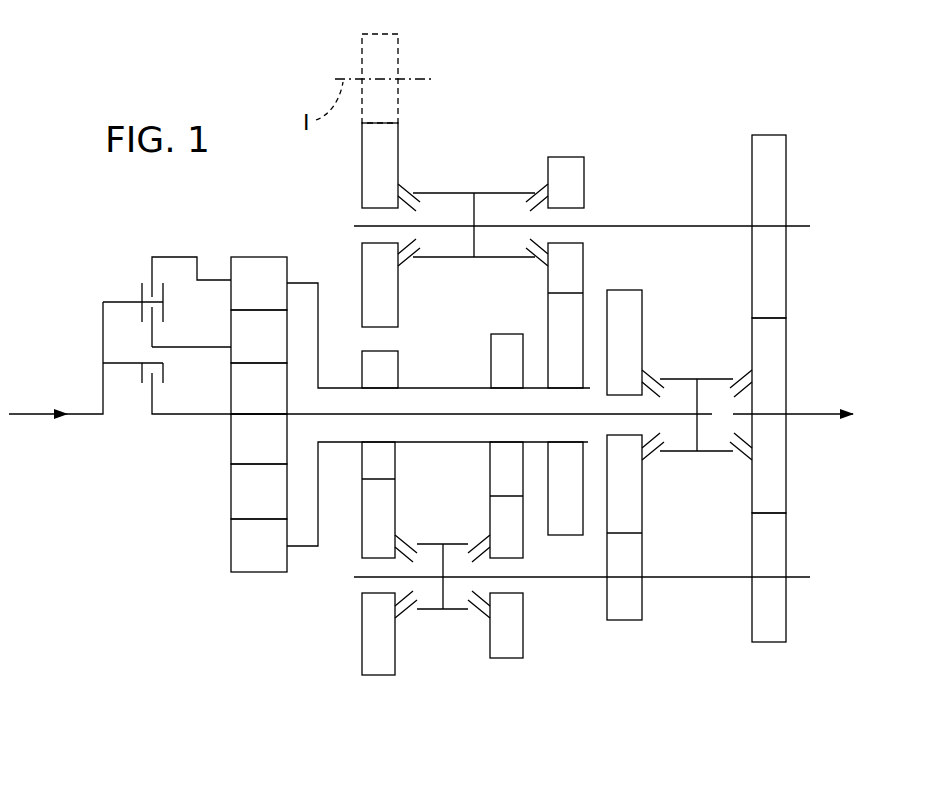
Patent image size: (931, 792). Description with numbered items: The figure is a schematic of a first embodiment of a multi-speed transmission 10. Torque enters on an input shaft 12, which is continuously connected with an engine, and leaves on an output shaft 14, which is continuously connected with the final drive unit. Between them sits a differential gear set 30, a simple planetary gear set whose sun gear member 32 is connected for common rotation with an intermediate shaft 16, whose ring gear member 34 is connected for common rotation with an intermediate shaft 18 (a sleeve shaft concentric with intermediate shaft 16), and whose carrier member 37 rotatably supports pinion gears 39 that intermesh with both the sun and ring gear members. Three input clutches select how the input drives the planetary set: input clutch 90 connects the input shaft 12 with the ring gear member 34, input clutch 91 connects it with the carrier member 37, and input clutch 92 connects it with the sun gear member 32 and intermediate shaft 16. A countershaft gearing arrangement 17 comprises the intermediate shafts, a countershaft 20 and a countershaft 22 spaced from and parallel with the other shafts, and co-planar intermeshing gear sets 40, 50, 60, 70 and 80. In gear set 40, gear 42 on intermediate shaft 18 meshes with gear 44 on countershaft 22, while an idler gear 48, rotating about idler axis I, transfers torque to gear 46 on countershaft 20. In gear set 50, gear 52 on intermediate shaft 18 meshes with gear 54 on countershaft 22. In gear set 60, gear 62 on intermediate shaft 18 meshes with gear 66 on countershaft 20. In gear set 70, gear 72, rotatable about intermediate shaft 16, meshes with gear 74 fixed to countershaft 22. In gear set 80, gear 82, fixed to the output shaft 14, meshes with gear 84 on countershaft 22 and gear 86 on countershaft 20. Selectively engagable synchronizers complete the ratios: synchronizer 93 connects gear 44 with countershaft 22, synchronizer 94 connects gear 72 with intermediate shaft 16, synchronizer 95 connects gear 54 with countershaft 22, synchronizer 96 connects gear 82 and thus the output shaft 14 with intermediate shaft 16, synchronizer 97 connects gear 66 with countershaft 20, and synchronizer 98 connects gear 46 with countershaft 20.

The multi-speed transmission 10 is at (839, 144).
The input shaft 12 is at (30, 416).
The output shaft 14 is at (812, 418).
The intermediate shaft 16 is at (170, 416).
The countershaft gearing arrangement 17 is at (641, 102).
The intermediate shaft 18 is at (448, 388).
The countershaft 20 is at (676, 226).
The countershaft 22 is at (710, 578).
The differential gear set 30 is at (236, 432).
The sun gear member 32 is at (230, 440).
The ring gear member 34 is at (258, 257).
The carrier member 37 is at (200, 348).
The pinion gears 39 is at (231, 333).
The gear set 40 is at (383, 606).
The gear 42 is at (395, 465).
The gear 44 is at (362, 652).
The gear 46 is at (362, 176).
The idler gear 48 is at (360, 55).
The gear set 50 is at (509, 596).
The gear 52 is at (490, 488).
The gear 54 is at (523, 645).
The gear set 60 is at (596, 237).
The gear 62 is at (584, 302).
The gear 66 is at (584, 170).
The gear set 70 is at (618, 491).
The gear 72 is at (642, 312).
The gear 74 is at (607, 598).
The gear set 80 is at (772, 430).
The gear 82 is at (790, 350).
The gear 84 is at (788, 614).
The gear 86 is at (752, 186).
The input clutch 90 is at (137, 263).
The input clutch 91 is at (137, 334).
The input clutch 92 is at (137, 402).
The synchronizer 93 is at (411, 620).
The synchronizer 94 is at (661, 465).
The synchronizer 95 is at (472, 620).
The synchronizer 96 is at (731, 372).
The synchronizer 97 is at (522, 182).
The synchronizer 98 is at (426, 182).